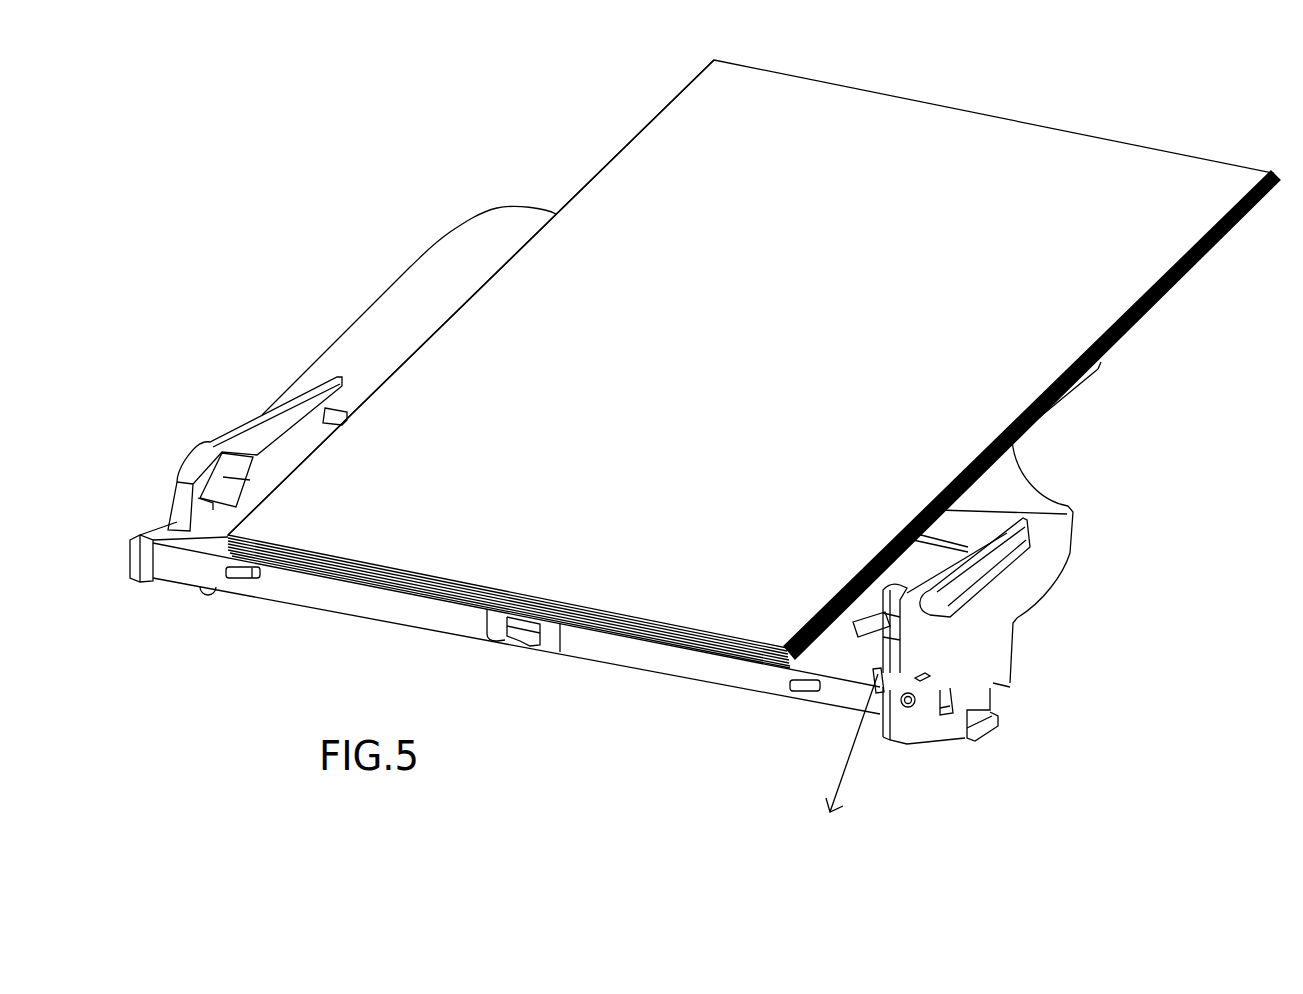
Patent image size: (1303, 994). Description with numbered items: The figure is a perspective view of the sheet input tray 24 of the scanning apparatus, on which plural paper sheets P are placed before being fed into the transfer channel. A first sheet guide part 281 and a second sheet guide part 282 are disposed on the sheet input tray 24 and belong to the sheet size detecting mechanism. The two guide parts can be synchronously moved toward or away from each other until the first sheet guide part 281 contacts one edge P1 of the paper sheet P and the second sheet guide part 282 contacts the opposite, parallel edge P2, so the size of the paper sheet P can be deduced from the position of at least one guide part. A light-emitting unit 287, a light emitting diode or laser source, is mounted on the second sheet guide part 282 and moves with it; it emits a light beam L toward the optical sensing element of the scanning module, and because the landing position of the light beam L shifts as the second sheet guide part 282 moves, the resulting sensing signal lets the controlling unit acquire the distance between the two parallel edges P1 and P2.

The paper sheet P is at (1066, 149).
The edge of the paper sheet P1 is at (622, 148).
The edge of the paper sheet P2 is at (1168, 297).
The sheet input tray 24 is at (420, 283).
The first sheet guide part 281 is at (256, 437).
The second sheet guide part 282 is at (922, 628).
The light-emitting unit 287 is at (877, 679).
The light beam L is at (848, 767).